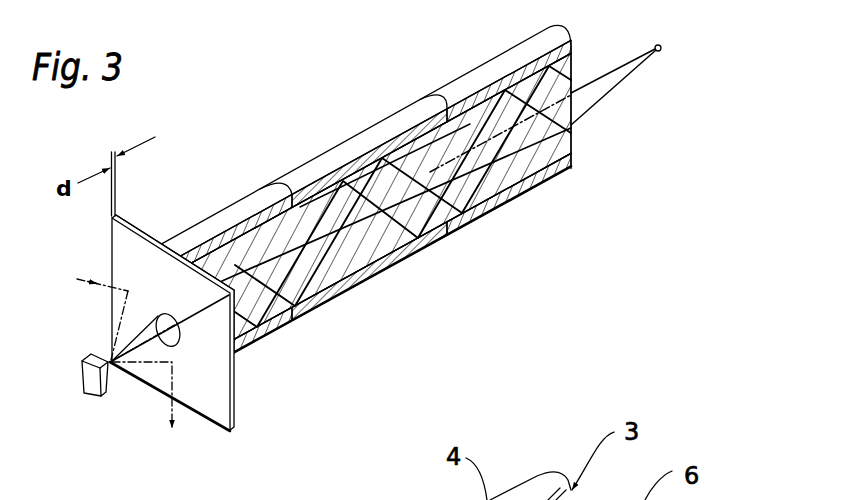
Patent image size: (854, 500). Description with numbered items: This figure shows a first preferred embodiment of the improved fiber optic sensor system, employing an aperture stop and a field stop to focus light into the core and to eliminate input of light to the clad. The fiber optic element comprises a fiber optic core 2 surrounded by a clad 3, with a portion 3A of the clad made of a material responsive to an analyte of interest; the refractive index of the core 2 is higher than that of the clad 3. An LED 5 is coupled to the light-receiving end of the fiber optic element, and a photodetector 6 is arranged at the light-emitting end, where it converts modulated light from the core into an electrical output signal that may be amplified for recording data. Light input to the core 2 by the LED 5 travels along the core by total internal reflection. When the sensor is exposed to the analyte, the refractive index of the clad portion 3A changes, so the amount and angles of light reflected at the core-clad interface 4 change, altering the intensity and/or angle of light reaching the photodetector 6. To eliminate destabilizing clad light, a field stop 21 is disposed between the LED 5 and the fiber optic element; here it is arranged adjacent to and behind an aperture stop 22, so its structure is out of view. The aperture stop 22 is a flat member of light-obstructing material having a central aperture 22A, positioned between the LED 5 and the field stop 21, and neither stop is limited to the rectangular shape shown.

The fiber optic core 2 is at (408, 196).
The clad 3 is at (578, 43).
The clad portion 3A is at (394, 123).
The core-clad interface 4 is at (486, 85).
The LED 5 is at (100, 402).
The photodetector 6 is at (661, 48).
The field stop 21 is at (238, 380).
The aperture stop 22 is at (237, 435).
The central aperture 22A is at (189, 355).